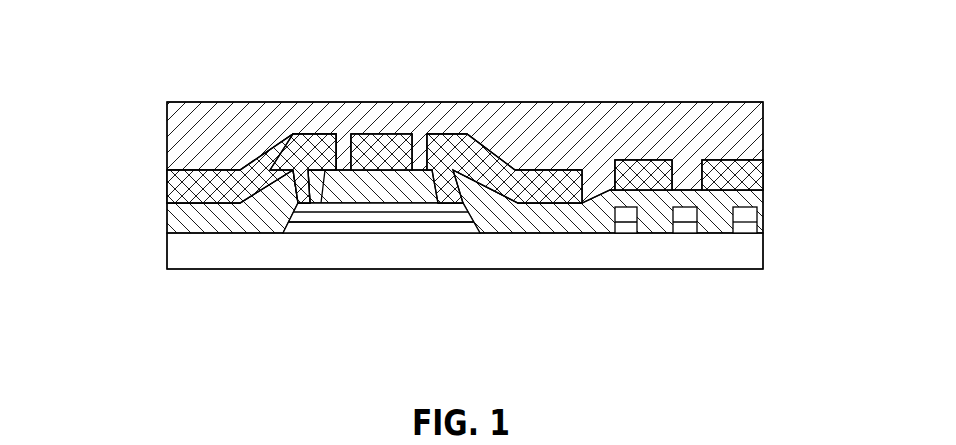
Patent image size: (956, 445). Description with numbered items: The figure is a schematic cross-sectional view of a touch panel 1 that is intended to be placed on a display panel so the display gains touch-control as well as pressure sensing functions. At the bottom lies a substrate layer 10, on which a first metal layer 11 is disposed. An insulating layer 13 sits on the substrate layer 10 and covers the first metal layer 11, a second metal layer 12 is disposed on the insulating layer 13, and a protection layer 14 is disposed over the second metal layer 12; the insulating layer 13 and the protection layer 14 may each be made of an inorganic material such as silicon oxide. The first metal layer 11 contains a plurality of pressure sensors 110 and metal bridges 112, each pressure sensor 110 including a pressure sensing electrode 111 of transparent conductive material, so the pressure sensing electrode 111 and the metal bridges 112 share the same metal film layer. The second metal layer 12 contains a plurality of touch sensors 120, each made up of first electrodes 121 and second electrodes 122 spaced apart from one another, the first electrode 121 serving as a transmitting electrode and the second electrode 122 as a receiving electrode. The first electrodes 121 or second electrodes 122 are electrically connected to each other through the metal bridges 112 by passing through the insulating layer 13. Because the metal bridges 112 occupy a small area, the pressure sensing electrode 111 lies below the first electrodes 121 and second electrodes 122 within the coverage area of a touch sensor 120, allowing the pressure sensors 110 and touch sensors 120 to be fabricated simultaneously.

The touch panel 1 is at (112, 99).
The substrate layer 10 is at (177, 250).
The first metal layer 11 is at (302, 243).
The pressure sensors 110 is at (717, 292).
The pressure sensing electrode 111 is at (627, 222).
The metal bridges 112 is at (357, 222).
The second metal layer 12 is at (157, 185).
The touch sensors 120 is at (242, 35).
The first electrodes 121 is at (283, 158).
The second electrodes 122 is at (472, 150).
The insulating layer 13 is at (175, 216).
The protection layer 14 is at (185, 131).